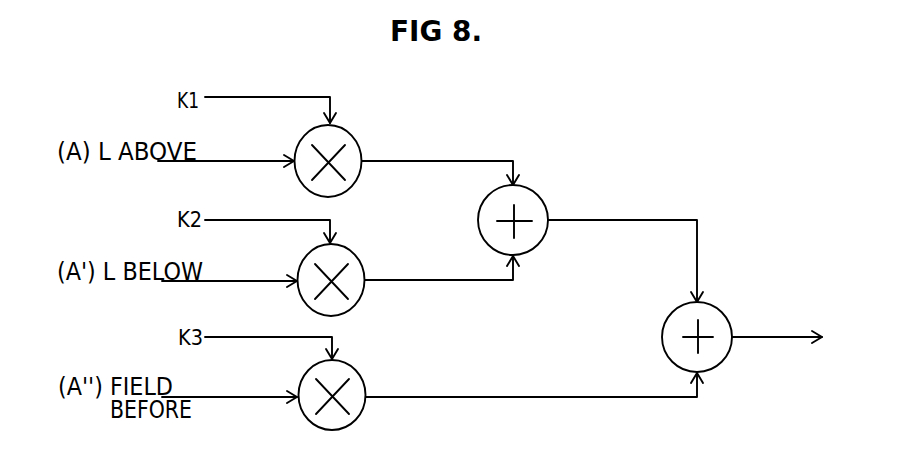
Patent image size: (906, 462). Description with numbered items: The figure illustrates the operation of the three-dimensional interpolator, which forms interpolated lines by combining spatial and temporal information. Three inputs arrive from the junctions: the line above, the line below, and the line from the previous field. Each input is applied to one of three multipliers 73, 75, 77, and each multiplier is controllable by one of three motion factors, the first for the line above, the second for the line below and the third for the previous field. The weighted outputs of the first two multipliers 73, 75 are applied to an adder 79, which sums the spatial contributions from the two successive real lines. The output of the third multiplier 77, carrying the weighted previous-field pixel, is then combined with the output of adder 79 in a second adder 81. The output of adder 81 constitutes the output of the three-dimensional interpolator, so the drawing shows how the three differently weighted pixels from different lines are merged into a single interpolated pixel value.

The multiplier 73 is at (360, 148).
The multiplier 75 is at (362, 264).
The multiplier 77 is at (363, 381).
The adder 79 is at (542, 201).
The adder 81 is at (728, 321).